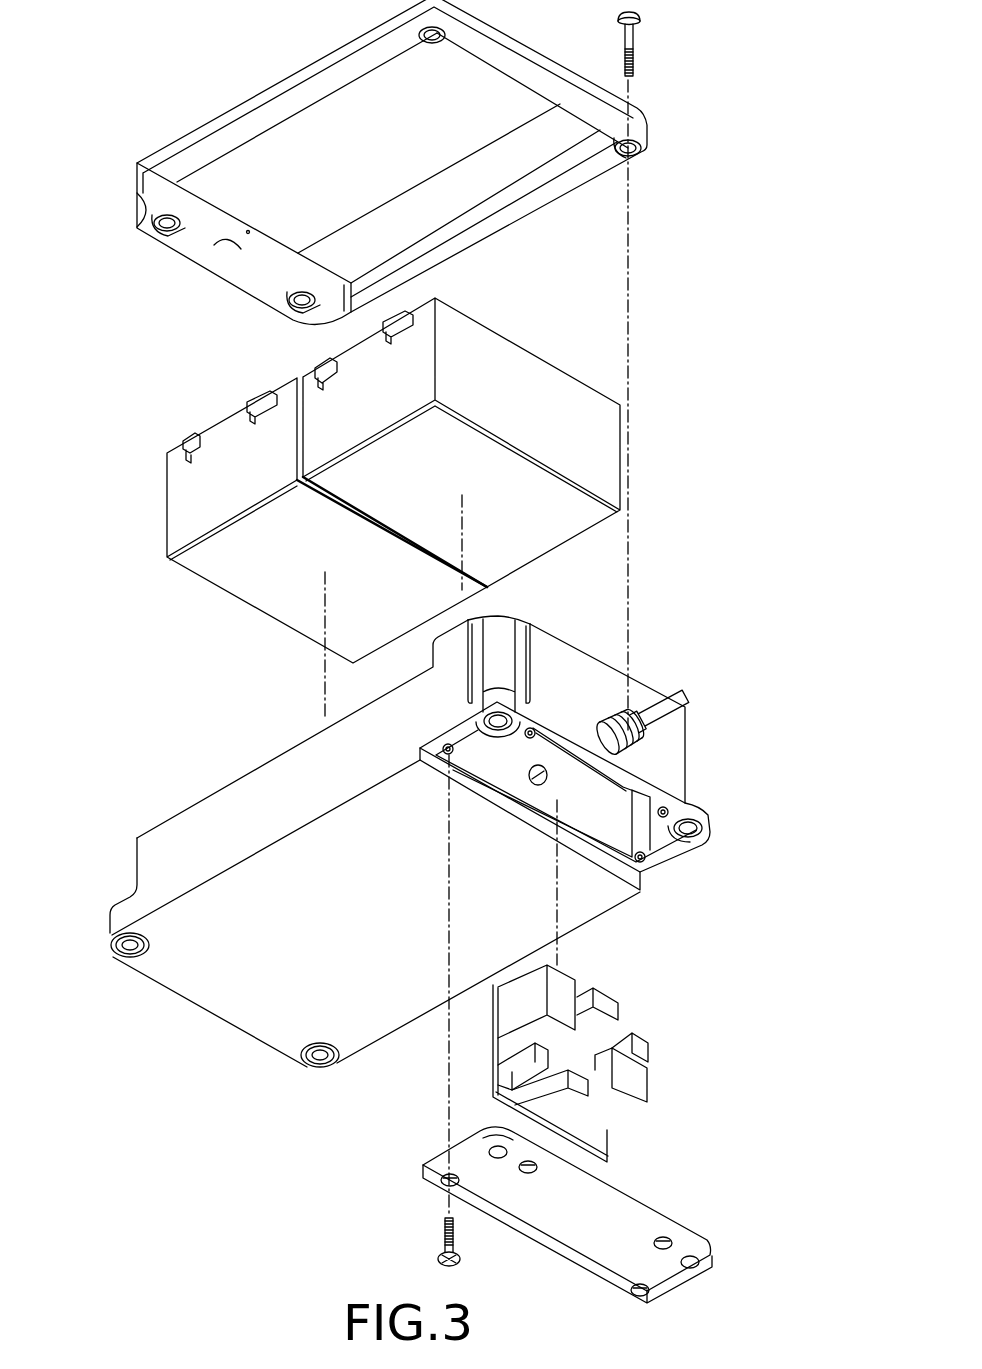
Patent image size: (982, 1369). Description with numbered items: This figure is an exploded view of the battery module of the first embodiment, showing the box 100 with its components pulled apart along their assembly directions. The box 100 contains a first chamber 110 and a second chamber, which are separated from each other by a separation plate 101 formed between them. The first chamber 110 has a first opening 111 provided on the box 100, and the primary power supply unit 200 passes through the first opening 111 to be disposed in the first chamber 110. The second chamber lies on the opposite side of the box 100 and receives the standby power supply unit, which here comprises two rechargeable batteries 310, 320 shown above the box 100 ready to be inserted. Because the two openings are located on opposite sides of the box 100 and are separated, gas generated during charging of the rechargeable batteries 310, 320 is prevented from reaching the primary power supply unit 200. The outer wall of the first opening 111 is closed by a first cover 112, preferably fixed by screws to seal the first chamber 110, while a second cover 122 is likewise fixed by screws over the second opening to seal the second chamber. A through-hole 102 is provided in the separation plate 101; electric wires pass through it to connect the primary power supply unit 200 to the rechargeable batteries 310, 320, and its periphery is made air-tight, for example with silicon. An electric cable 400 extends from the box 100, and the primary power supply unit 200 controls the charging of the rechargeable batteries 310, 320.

The box 100 is at (213, 1018).
The separation plate 101 is at (580, 803).
The through-hole 102 is at (550, 779).
The first chamber 110 is at (600, 817).
The first opening 111 is at (663, 850).
The first cover 112 is at (437, 1162).
The second cover 122 is at (262, 105).
The primary power supply unit 200 is at (657, 1088).
The rechargeable battery 310 is at (527, 367).
The rechargeable battery 320 is at (180, 503).
The electric cable 400 is at (691, 708).